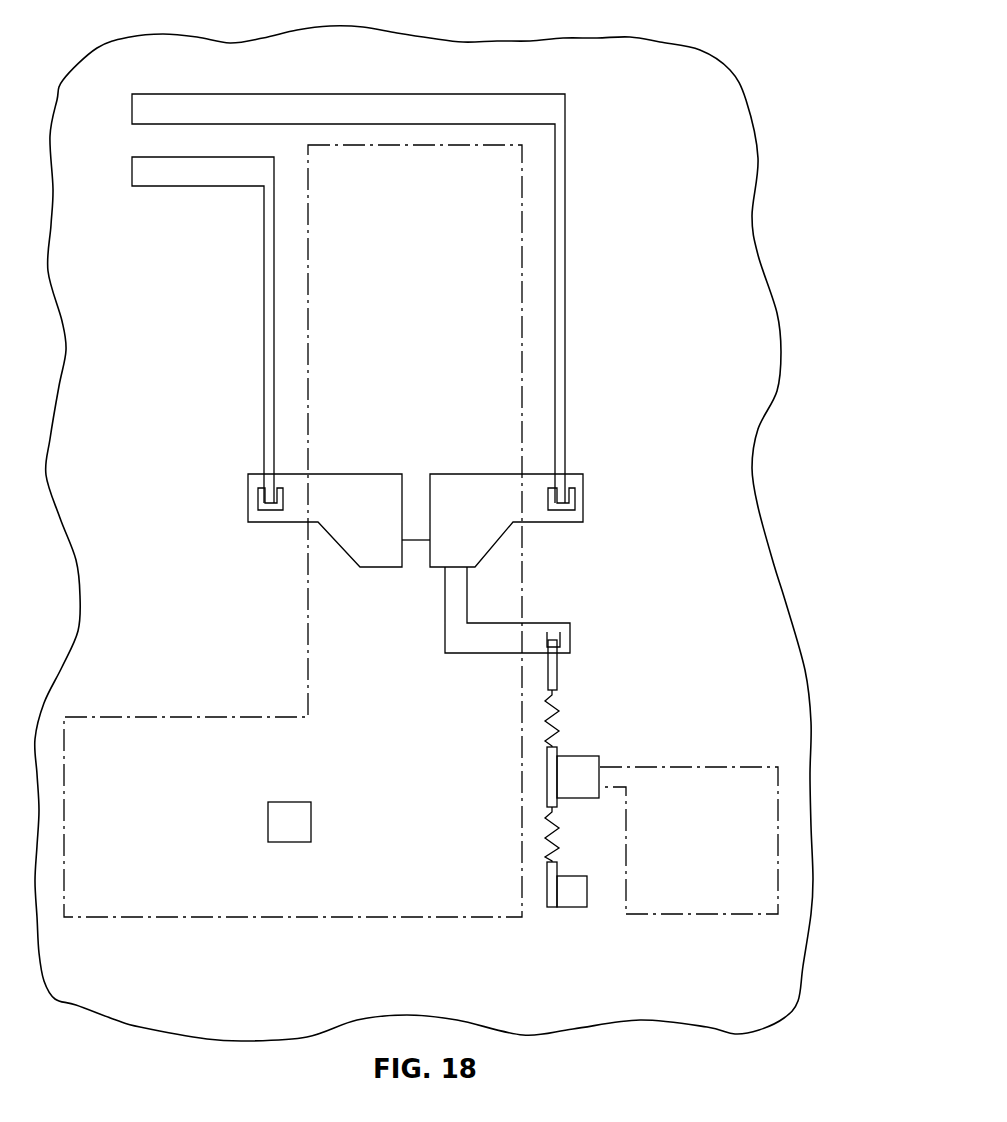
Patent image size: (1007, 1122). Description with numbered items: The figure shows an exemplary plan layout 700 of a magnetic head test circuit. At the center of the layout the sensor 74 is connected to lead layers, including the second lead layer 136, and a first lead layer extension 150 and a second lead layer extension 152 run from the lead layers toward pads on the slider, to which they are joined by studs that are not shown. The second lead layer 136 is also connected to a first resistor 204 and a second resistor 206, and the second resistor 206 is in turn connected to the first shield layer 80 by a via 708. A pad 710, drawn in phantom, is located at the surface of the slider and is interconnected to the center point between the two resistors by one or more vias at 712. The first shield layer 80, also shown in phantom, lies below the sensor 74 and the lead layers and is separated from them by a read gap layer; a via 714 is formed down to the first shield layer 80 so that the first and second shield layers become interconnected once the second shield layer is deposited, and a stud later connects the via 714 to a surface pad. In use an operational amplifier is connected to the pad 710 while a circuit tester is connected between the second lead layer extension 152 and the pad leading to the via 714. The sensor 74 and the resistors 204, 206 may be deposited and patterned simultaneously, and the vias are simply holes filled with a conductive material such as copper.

The plan layout 700 is at (626, 41).
The first lead layer extension 150 is at (264, 285).
The second lead layer extension 152 is at (565, 280).
The second lead layer 136 is at (357, 478).
The sensor 74 is at (417, 567).
The first shield layer 80 is at (140, 920).
The pad 710 is at (740, 783).
The first resistor 204 is at (556, 717).
The vias 712 is at (565, 779).
The second resistor 206 is at (552, 837).
The via 708 is at (568, 907).
The via 714 is at (275, 821).